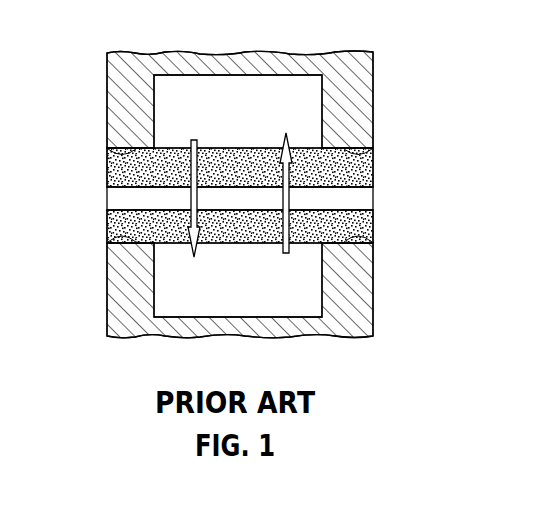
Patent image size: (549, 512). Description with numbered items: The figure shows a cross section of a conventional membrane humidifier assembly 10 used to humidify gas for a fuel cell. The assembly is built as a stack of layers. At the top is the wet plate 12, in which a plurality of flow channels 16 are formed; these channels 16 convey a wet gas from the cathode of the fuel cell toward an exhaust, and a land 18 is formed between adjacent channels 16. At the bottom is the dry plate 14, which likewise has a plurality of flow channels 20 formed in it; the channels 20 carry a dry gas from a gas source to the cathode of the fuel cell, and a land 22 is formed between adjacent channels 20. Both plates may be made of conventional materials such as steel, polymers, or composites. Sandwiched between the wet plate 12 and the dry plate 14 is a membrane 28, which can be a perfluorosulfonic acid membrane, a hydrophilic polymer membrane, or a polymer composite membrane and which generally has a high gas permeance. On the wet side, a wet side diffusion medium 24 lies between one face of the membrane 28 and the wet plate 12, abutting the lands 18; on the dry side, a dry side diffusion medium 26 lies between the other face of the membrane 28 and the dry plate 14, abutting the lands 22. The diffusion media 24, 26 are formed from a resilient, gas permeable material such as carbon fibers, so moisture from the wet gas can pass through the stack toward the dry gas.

The membrane humidifier assembly 10 is at (233, 173).
The wet plate 12 is at (104, 104).
The dry plate 14 is at (104, 317).
The flow channels 16 is at (238, 111).
The land 18 is at (106, 157).
The flow channels 20 is at (238, 280).
The land 22 is at (122, 235).
The wet side diffusion medium 24 is at (104, 170).
The dry side diffusion medium 26 is at (104, 217).
The membrane 28 is at (104, 195).